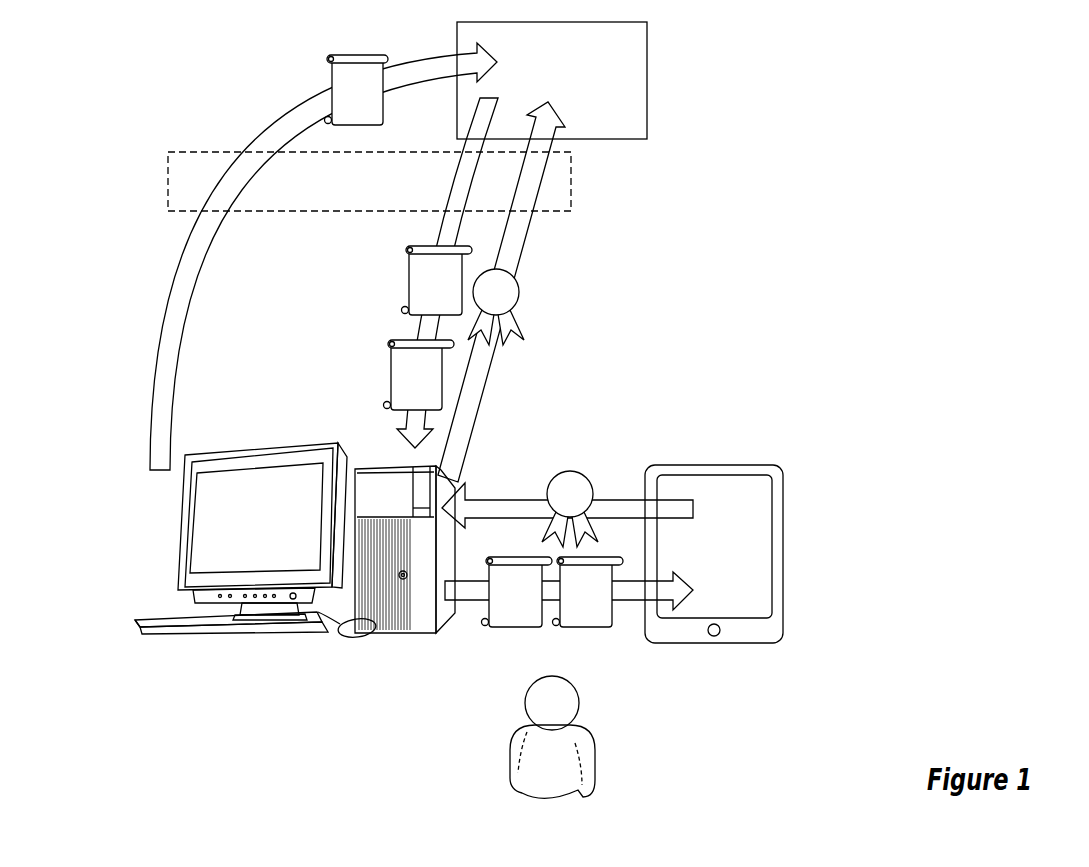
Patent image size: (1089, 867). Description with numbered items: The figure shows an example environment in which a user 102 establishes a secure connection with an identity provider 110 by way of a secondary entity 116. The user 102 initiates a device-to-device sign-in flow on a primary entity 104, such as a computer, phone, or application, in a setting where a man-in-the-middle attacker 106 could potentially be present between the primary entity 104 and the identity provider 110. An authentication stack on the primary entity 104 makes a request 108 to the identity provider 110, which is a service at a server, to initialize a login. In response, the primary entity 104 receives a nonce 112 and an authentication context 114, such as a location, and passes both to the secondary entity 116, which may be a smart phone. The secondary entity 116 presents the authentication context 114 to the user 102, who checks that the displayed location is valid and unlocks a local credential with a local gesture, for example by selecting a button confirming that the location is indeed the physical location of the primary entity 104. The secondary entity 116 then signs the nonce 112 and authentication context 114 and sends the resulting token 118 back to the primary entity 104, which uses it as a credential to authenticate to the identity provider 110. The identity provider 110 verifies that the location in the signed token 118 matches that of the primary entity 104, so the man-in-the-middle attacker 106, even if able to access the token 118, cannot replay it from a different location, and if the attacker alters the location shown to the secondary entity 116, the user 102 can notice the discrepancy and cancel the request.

The user 102 is at (618, 732).
The primary entity 104 is at (150, 540).
The man-in-the-middle attacker 106 is at (571, 190).
The request 108 is at (357, 90).
The identity provider 110 is at (552, 80).
The nonce 112 is at (468, 483).
The authentication context 114 is at (513, 436).
The secondary entity 116 is at (714, 554).
The token 118 is at (533, 408).